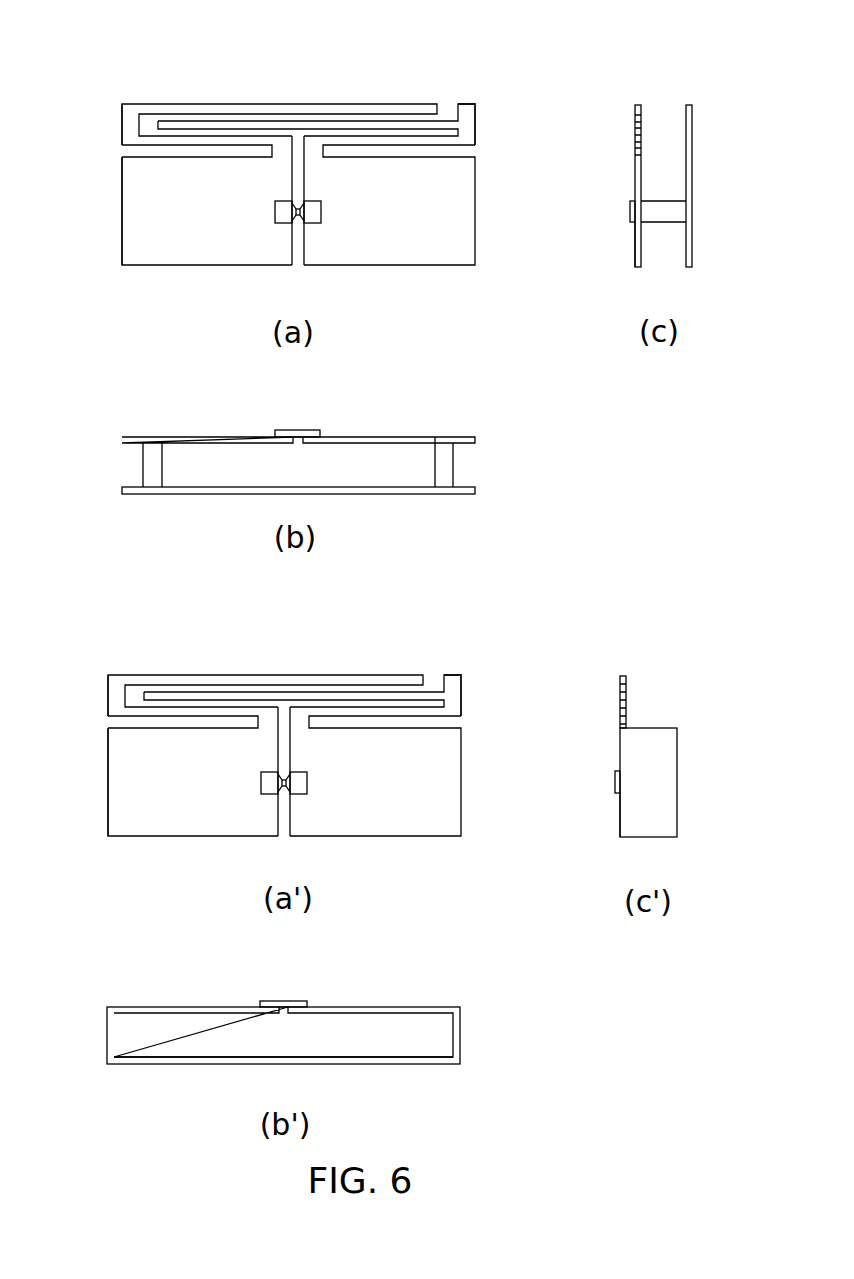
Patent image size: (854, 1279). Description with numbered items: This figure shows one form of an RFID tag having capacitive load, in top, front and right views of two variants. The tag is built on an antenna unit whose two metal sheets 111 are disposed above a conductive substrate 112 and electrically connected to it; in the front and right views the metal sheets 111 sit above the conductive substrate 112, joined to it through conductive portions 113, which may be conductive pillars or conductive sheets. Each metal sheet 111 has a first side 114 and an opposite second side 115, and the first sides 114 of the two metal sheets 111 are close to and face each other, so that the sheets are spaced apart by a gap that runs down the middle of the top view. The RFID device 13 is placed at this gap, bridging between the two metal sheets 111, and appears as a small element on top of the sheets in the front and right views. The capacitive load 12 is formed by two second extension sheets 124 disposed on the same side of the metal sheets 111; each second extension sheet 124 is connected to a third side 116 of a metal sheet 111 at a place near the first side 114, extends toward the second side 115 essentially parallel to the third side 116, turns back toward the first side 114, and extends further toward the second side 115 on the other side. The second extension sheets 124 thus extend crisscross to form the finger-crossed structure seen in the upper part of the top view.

The capacitive load 12 is at (157, 93).
The RFID device 13 is at (285, 212).
The metal sheet 111 is at (119, 252).
The conductive substrate 112 is at (692, 118).
The conductive portion 113 is at (667, 212).
The first side 114 is at (296, 242).
The second side 115 is at (119, 216).
The third side 116 is at (133, 157).
The second extension sheet 124 is at (122, 114).